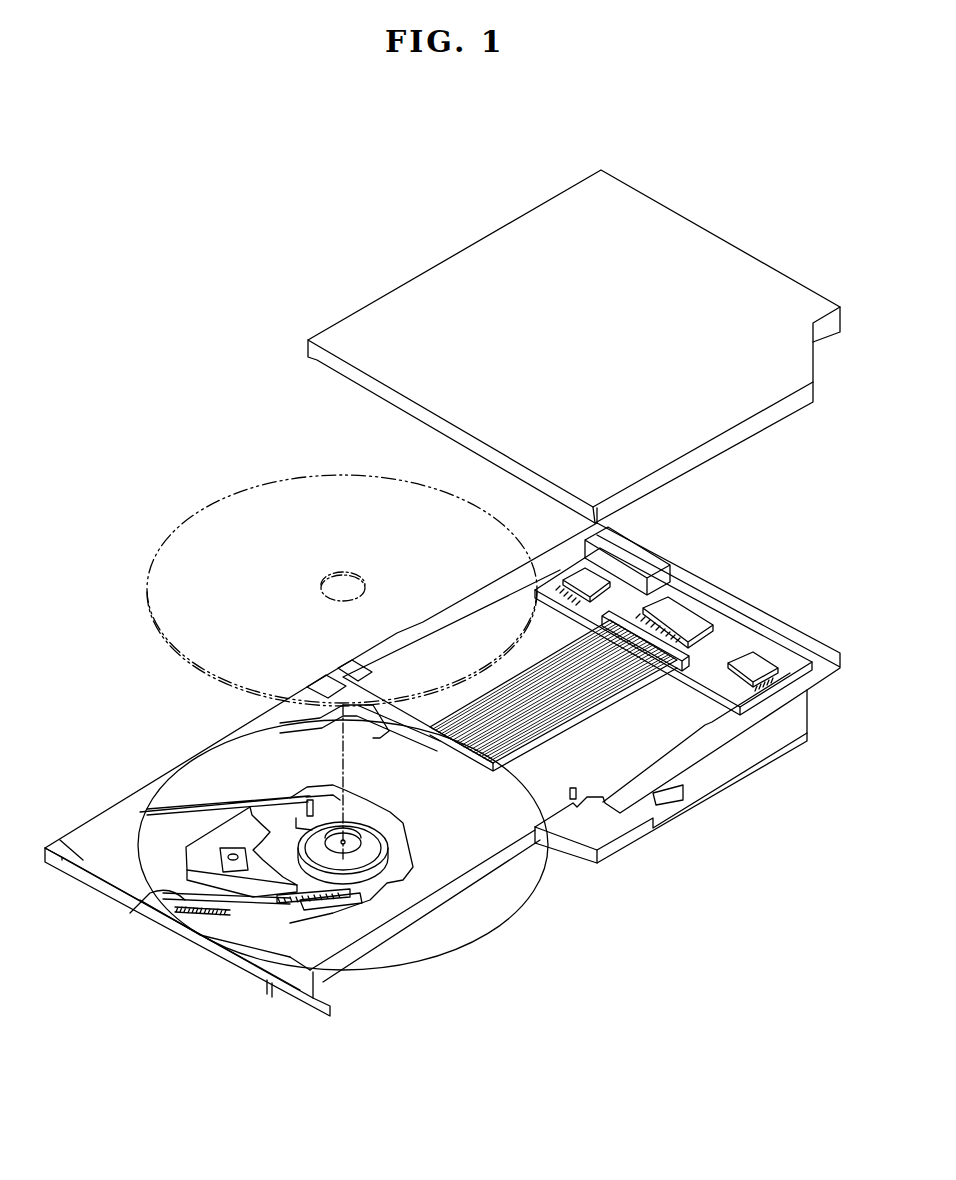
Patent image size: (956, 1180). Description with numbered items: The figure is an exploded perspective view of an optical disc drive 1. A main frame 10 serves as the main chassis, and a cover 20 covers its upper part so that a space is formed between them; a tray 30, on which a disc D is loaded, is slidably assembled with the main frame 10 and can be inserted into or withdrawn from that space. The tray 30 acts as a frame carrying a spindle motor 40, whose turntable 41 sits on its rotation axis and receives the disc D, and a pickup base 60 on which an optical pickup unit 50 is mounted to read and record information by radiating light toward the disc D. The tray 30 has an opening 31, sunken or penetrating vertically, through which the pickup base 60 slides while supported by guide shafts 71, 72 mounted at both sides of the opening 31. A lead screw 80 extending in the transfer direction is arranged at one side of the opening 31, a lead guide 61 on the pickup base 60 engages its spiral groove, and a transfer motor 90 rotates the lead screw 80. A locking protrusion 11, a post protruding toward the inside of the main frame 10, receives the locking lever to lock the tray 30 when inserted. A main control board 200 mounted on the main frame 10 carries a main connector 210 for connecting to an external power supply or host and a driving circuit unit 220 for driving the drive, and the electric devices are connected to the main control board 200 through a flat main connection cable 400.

The optical disc drive 1 is at (193, 317).
The main frame 10 is at (720, 800).
The locking protrusion 11 is at (573, 788).
The cover 20 is at (407, 294).
The tray 30 is at (243, 973).
The opening 31 is at (280, 849).
The spindle motor 40 is at (387, 876).
The turntable 41 is at (353, 838).
The optical pickup unit 50 is at (232, 850).
The pickup base 60 is at (192, 846).
The lead guide 61 is at (240, 927).
The guide shaft 71 is at (157, 897).
The guide shaft 72 is at (200, 810).
The lead screw 80 is at (310, 903).
The transfer motor 90 is at (357, 903).
The main control board 200 is at (733, 617).
The main connector 210 is at (641, 556).
The driving circuit unit 220 is at (763, 656).
The main connection cable 400 is at (628, 685).
The disc D is at (195, 531).